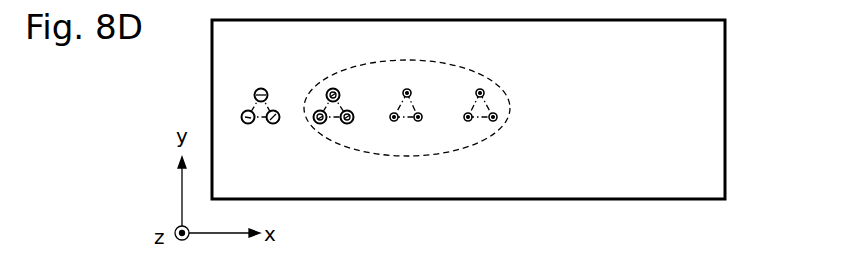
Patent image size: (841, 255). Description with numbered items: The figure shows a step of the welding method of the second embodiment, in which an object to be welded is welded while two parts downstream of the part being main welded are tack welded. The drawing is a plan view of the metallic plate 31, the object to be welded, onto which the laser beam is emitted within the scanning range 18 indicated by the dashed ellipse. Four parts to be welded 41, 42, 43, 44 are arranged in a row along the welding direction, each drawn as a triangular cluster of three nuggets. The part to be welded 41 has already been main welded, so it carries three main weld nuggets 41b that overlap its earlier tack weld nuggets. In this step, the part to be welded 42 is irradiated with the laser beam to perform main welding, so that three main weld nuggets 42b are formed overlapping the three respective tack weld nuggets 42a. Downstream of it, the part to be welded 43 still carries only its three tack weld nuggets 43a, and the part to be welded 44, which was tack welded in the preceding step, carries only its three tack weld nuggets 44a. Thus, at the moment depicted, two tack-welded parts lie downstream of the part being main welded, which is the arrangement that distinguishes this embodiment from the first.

The scanning range 18 is at (505, 78).
The metallic plate 31 is at (725, 110).
The part to be welded 41 is at (259, 112).
The main weld nuggets 41b is at (261, 88).
The part to be welded 42 is at (350, 112).
The tack weld nuggets 42a is at (352, 109).
The main weld nuggets 42b is at (333, 88).
The part to be welded 43 is at (419, 131).
The tack weld nuggets 43a is at (420, 112).
The part to be welded 44 is at (518, 141).
The tack weld nuggets 44a is at (497, 117).